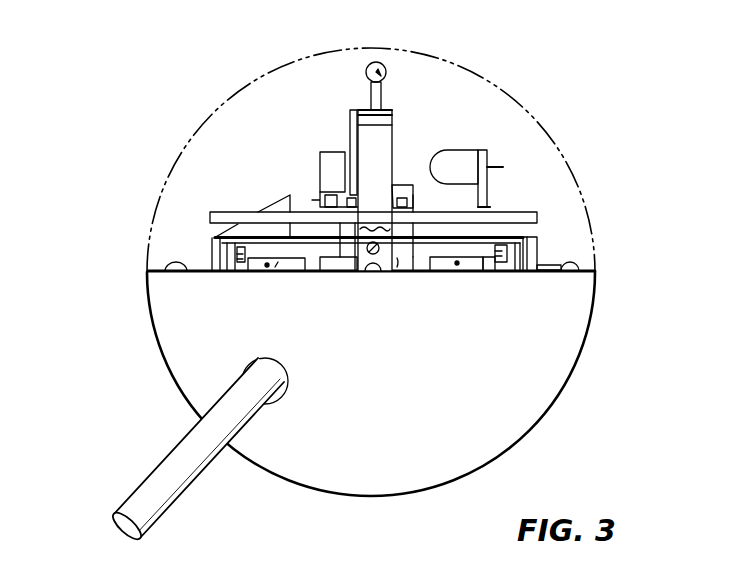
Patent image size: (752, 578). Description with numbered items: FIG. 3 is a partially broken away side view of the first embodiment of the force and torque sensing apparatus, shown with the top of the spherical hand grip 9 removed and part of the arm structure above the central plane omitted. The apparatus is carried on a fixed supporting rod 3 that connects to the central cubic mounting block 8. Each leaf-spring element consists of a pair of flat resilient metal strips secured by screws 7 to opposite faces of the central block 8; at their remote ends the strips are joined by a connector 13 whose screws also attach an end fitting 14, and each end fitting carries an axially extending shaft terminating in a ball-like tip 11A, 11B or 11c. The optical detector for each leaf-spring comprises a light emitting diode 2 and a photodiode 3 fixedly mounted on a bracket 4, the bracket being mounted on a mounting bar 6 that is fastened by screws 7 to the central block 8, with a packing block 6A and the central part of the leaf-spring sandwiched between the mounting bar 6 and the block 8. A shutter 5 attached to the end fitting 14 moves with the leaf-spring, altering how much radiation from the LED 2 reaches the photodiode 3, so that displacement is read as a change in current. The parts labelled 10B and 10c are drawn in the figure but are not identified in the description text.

The light emitting diode 2 is at (453, 165).
The photodiode 3 is at (187, 473).
The bracket 4 is at (487, 197).
The shutter 5 is at (349, 126).
The mounting bar 6 is at (527, 217).
The packing block 6A is at (343, 238).
The screws 7 is at (396, 200).
The central mounting block 8 is at (414, 206).
The spherical hand grip 9 is at (577, 303).
The lower bearing block 10B is at (492, 240).
The upper column 10c is at (378, 142).
The ball-like tip 11A is at (377, 267).
The ball-like tip 11B is at (150, 262).
The ball-like tip 11c is at (384, 70).
The connector 13 is at (513, 265).
The end fitting 14 is at (388, 114).